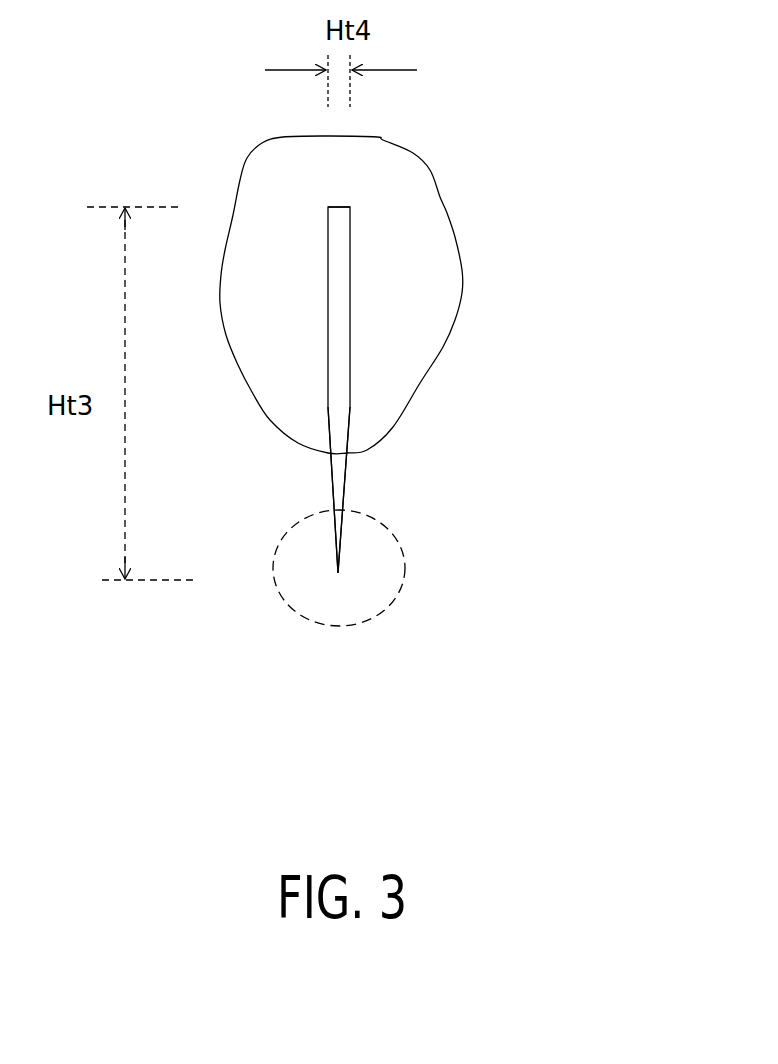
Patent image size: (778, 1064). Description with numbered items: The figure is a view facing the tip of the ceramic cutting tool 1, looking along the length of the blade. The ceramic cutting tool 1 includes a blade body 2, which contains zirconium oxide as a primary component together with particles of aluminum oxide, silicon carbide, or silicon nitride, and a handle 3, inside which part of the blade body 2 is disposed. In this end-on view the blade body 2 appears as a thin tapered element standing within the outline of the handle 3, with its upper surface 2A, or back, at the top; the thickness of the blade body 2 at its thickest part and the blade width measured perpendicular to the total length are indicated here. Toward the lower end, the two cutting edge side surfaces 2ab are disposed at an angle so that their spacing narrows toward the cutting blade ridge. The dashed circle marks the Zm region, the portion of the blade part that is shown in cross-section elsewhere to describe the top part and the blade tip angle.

The ceramic cutting tool 1 is at (468, 125).
The blade body 2 is at (343, 323).
The upper surface 2A is at (337, 207).
The cutting edge side surfaces 2ab is at (330, 477).
The handle 3 is at (270, 392).
The Zm region Zm is at (288, 610).